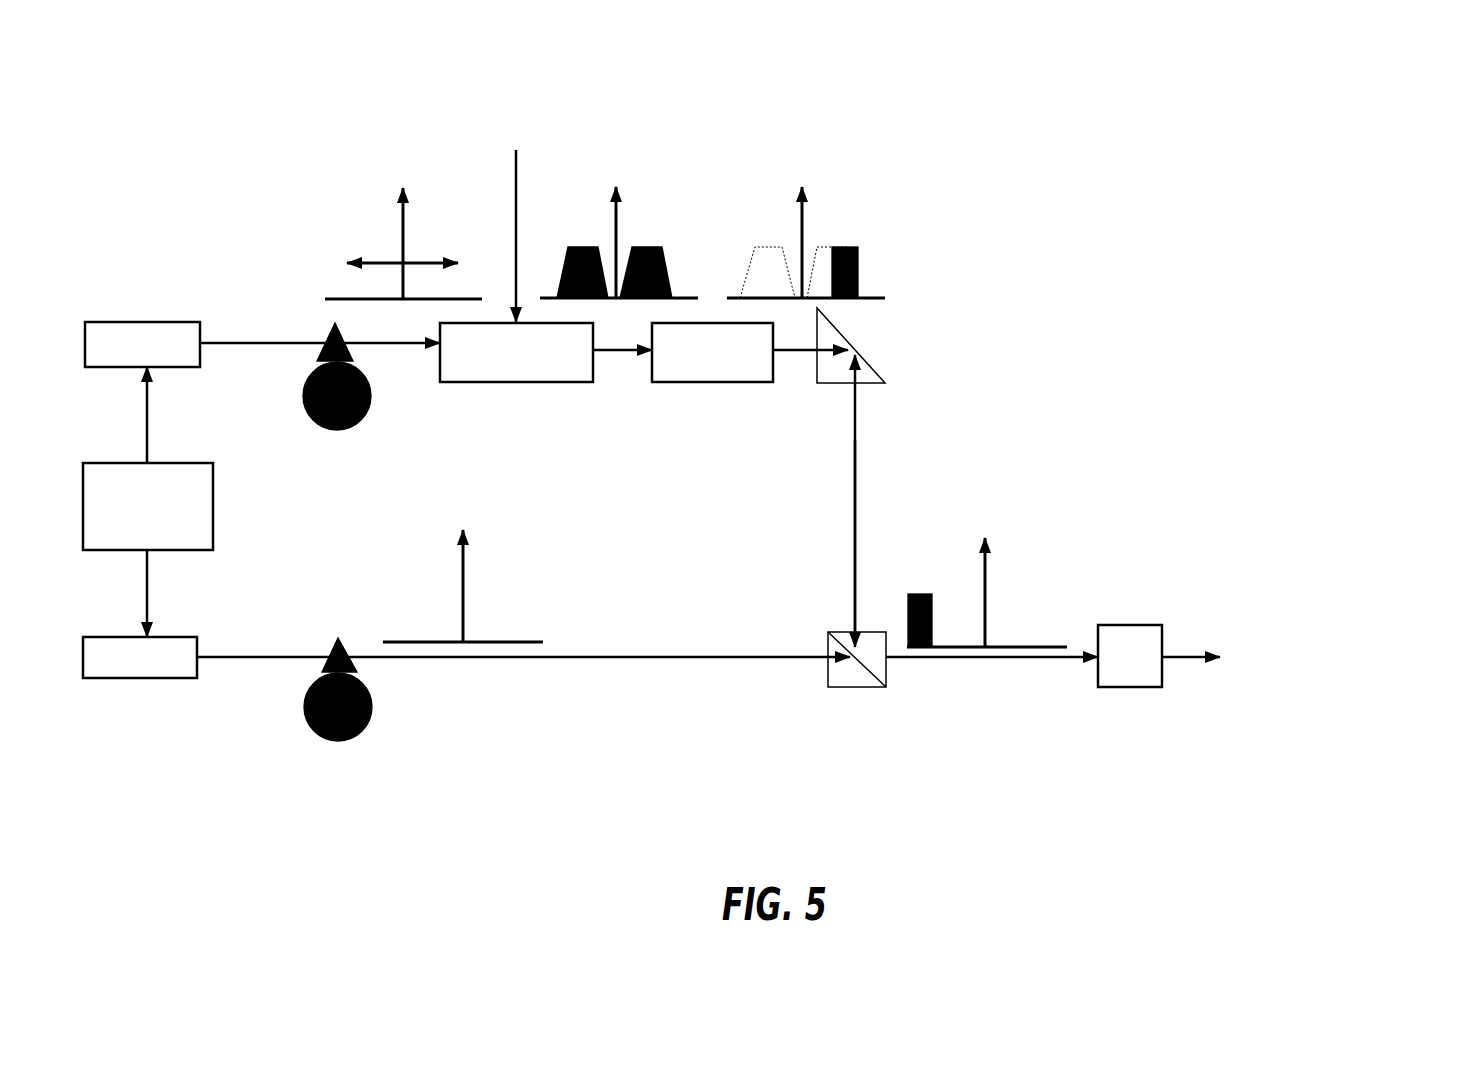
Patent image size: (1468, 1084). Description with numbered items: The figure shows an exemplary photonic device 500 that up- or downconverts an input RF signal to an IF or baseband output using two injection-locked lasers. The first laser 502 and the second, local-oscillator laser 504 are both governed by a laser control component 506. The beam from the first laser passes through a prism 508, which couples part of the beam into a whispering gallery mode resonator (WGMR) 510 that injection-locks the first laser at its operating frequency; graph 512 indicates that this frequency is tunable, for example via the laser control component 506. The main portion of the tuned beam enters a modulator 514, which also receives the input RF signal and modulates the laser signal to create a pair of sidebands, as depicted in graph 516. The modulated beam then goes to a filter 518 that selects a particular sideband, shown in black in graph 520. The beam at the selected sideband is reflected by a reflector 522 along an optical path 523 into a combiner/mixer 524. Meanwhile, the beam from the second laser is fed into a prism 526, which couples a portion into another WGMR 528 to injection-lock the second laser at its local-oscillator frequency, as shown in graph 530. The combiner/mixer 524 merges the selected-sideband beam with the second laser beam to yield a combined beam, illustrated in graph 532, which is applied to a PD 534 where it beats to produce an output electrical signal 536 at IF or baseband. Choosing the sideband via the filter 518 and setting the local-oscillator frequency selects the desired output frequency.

The device 500 is at (768, 416).
The laser #1 502 is at (175, 367).
The LO laser #2 504 is at (158, 678).
The laser control component 506 is at (193, 550).
The prism 508 is at (330, 335).
The whispering gallery mode resonator (WGMR) 510 is at (370, 415).
The graph 512 is at (366, 225).
The modulator 514 is at (537, 382).
The graph 516 is at (582, 217).
The filter 518 is at (707, 382).
The graph 520 is at (854, 223).
The reflector 522 is at (880, 385).
The optical path 523 is at (855, 540).
The combiner/mixer 524 is at (862, 687).
The prism 526 is at (338, 640).
The WGMR 528 is at (370, 725).
The graph 530 is at (458, 574).
The graph 532 is at (978, 558).
The PD 534 is at (1127, 687).
The output electrical signal 536 is at (1307, 606).